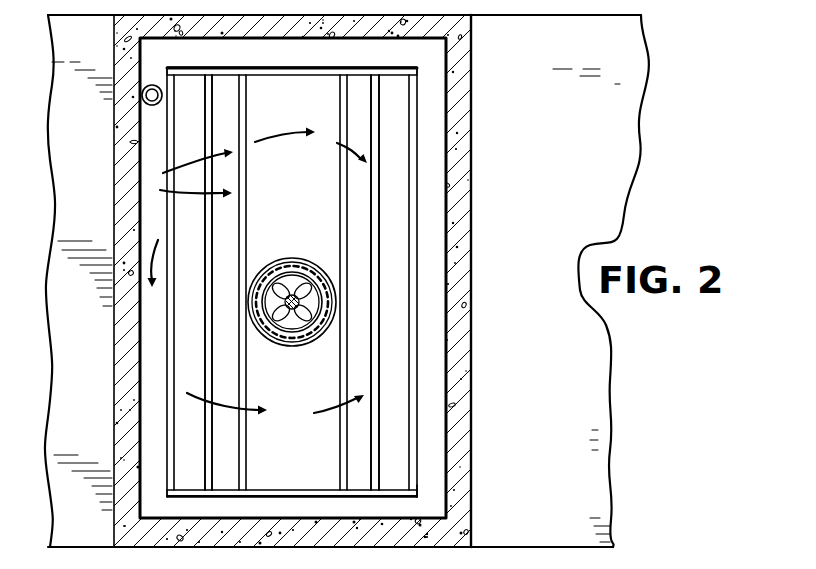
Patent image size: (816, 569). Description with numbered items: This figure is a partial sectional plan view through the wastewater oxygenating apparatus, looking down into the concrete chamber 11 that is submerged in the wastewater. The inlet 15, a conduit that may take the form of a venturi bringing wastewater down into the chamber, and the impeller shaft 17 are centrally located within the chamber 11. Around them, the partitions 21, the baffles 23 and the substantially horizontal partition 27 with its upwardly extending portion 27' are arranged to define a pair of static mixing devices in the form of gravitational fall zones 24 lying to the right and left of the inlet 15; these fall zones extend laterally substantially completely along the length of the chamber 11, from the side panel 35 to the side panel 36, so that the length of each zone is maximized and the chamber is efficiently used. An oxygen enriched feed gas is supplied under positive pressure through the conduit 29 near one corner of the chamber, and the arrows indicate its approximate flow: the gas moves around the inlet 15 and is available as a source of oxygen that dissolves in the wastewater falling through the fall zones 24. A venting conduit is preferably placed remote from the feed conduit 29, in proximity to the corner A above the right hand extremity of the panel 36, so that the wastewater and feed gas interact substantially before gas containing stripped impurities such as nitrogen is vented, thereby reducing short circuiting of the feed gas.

The chamber 11 is at (556, 195).
The inlet 15 is at (293, 347).
The impeller shaft 17 is at (293, 295).
The partition 21 is at (340, 172).
The baffle 23 is at (205, 270).
The gravitational fall zone 24 is at (195, 105).
The horizontal partition 27 is at (275, 427).
The upwardly extending portion 27' is at (291, 208).
The feed gas conduit 29 is at (152, 85).
The side panel 35 is at (313, 67).
The side panel 36 is at (310, 493).
The corner A is at (422, 492).